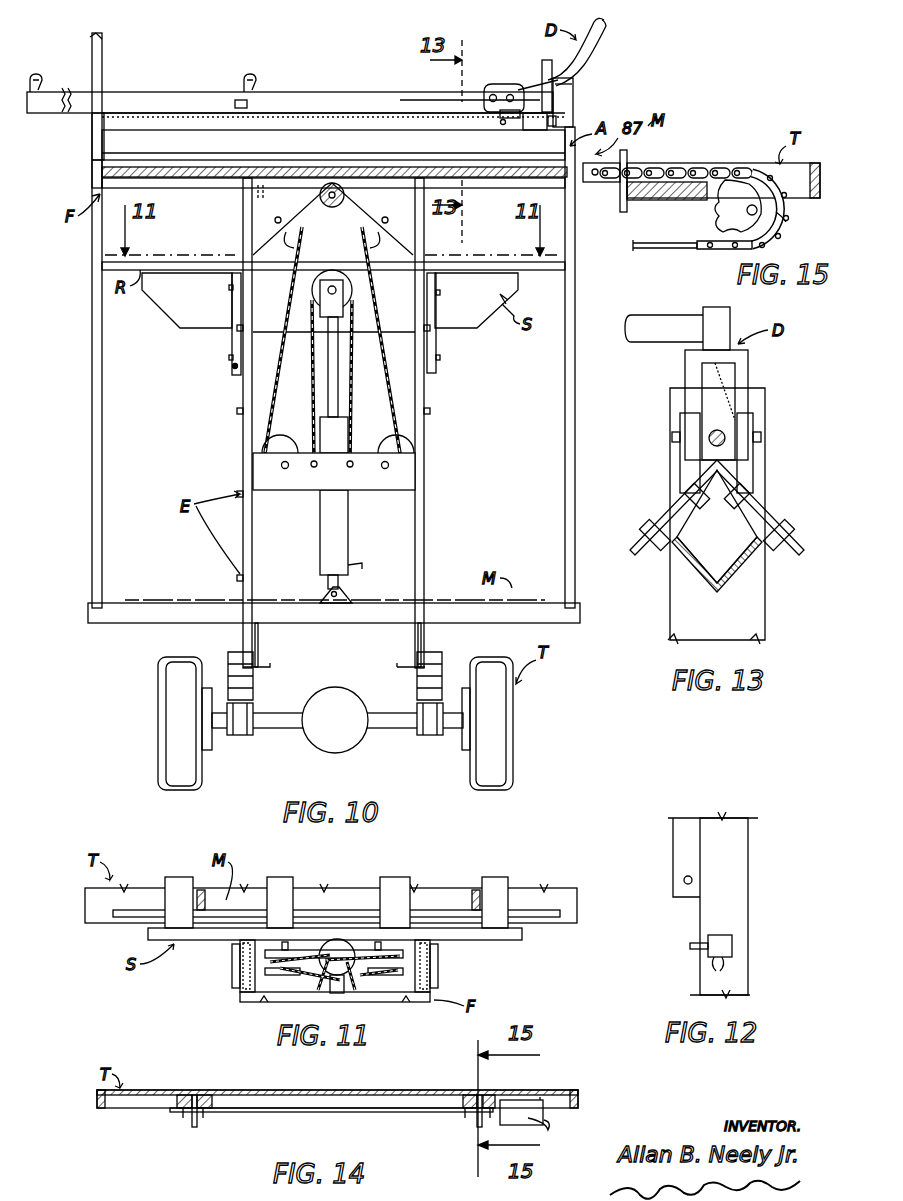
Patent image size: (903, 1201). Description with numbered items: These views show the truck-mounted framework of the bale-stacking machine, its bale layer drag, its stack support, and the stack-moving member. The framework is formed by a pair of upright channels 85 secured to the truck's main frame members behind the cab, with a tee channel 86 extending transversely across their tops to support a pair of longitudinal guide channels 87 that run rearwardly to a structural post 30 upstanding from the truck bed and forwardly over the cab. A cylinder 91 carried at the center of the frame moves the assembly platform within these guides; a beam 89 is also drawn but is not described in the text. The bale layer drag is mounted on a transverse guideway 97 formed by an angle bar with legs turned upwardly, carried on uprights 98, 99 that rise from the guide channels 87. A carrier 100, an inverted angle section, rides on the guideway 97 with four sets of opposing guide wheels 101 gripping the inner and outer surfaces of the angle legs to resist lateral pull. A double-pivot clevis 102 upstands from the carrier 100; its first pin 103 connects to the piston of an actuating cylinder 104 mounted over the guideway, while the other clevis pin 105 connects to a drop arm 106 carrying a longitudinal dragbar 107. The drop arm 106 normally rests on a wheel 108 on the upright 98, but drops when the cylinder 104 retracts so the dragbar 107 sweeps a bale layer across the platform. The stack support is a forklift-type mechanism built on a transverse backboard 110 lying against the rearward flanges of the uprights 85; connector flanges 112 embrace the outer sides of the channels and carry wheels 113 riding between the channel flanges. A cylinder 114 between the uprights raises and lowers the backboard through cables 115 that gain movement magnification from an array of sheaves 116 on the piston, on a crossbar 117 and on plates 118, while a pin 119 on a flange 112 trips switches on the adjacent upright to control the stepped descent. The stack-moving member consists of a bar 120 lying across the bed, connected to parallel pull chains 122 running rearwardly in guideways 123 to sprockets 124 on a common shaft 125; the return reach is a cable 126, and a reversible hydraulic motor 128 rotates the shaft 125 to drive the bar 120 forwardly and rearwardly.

In FIG. 10, the post 30 is at (92, 427).
In FIG. 10, the upright channel 85 is at (242, 536).
In FIG. 11, the upright channel 85 is at (238, 994).
In FIG. 12, the upright channel 85 is at (748, 918).
In FIG. 10, the tee channel 86 is at (262, 633).
In FIG. 10, the guide channel 87 is at (92, 180).
In FIG. 10, the beam 89 is at (342, 140).
In FIG. 10, the cylinder 91 is at (338, 208).
In FIG. 10, the transverse guideway 97 is at (396, 132).
In FIG. 13, the transverse guideway 97 is at (744, 574).
In FIG. 10, the upright 98 is at (574, 94).
In FIG. 13, the upright 98 is at (748, 612).
In FIG. 10, the upright 99 is at (92, 147).
In FIG. 10, the carrier 100 is at (556, 128).
In FIG. 13, the carrier 100 is at (792, 536).
In FIG. 13, the guide wheel 101 is at (664, 564).
In FIG. 10, the double-pivot clevis 102 is at (511, 86).
In FIG. 13, the double-pivot clevis 102 is at (750, 482).
In FIG. 10, the first pin 103 is at (482, 86).
In FIG. 13, the first pin 103 is at (762, 444).
In FIG. 10, the actuating cylinder 104 is at (156, 90).
In FIG. 13, the actuating cylinder 104 is at (724, 436).
In FIG. 10, the clevis pin 105 is at (515, 74).
In FIG. 10, the drop arm 106 is at (584, 36).
In FIG. 13, the drop arm 106 is at (730, 324).
In FIG. 13, the dragbar 107 is at (656, 344).
In FIG. 10, the wheel 108 is at (572, 79).
In FIG. 10, the backboard 110 is at (518, 273).
In FIG. 11, the backboard 110 is at (522, 938).
In FIG. 10, the connector flange 112 is at (230, 340).
In FIG. 11, the connector flange 112 is at (240, 957).
In FIG. 12, the connector flange 112 is at (680, 852).
In FIG. 11, the wheel 113 is at (238, 977).
In FIG. 10, the cylinder 114 is at (348, 530).
In FIG. 11, the cylinder 114 is at (340, 942).
In FIG. 10, the cable 115 is at (398, 399).
In FIG. 11, the cable 115 is at (344, 940).
In FIG. 10, the sheave 116 is at (340, 228).
In FIG. 11, the sheave 116 is at (354, 990).
In FIG. 10, the crossbar 117 is at (414, 476).
In FIG. 11, the crossbar 117 is at (388, 990).
In FIG. 10, the plate 118 is at (252, 214).
In FIG. 10, the pin 119 is at (234, 368).
In FIG. 12, the pin 119 is at (680, 888).
In FIG. 15, the bar 120 is at (618, 166).
In FIG. 11, the bar 120 is at (554, 913).
In FIG. 15, the pull chain 122 is at (744, 170).
In FIG. 11, the pull chain 122 is at (198, 876).
In FIG. 15, the guideway 123 is at (690, 166).
In FIG. 11, the guideway 123 is at (472, 890).
In FIG. 14, the guideway 123 is at (194, 1096).
In FIG. 15, the sprocket 124 is at (780, 214).
In FIG. 14, the sprocket 124 is at (188, 1126).
In FIG. 15, the shaft 125 is at (742, 208).
In FIG. 14, the shaft 125 is at (328, 1114).
In FIG. 15, the cable 126 is at (668, 250).
In FIG. 14, the reversible hydraulic motor 128 is at (540, 1126).